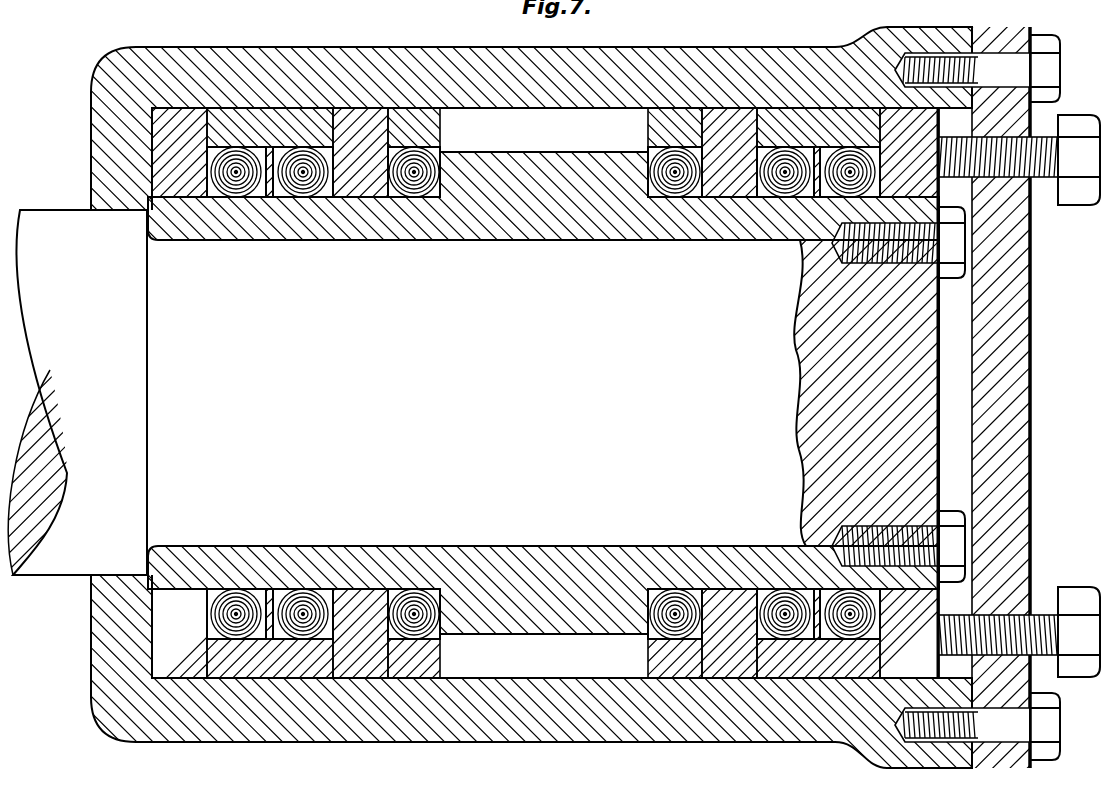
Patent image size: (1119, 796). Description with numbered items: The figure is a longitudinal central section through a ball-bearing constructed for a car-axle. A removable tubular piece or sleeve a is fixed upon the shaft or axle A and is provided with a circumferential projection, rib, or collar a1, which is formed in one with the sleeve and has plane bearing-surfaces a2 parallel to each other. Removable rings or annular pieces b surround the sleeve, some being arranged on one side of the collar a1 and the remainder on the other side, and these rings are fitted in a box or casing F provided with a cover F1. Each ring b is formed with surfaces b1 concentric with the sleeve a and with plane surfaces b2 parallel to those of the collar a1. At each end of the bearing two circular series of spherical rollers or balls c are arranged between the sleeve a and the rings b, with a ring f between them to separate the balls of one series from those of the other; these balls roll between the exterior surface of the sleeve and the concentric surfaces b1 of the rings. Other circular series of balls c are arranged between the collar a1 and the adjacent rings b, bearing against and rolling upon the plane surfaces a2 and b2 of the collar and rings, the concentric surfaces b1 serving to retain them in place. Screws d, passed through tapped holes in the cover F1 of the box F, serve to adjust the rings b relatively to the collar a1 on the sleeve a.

The box F is at (559, 398).
The cover F1 is at (650, 398).
The rings b is at (559, 398).
The concentric surfaces b1 is at (252, 148).
The plane surfaces b2 is at (704, 625).
The balls c is at (543, 393).
The ring f is at (812, 640).
The tubular piece or sleeve a is at (559, 398).
The collar a1 is at (544, 393).
The plane bearing-surfaces a2 is at (650, 612).
The screws d is at (1019, 396).
The axle A is at (559, 398).